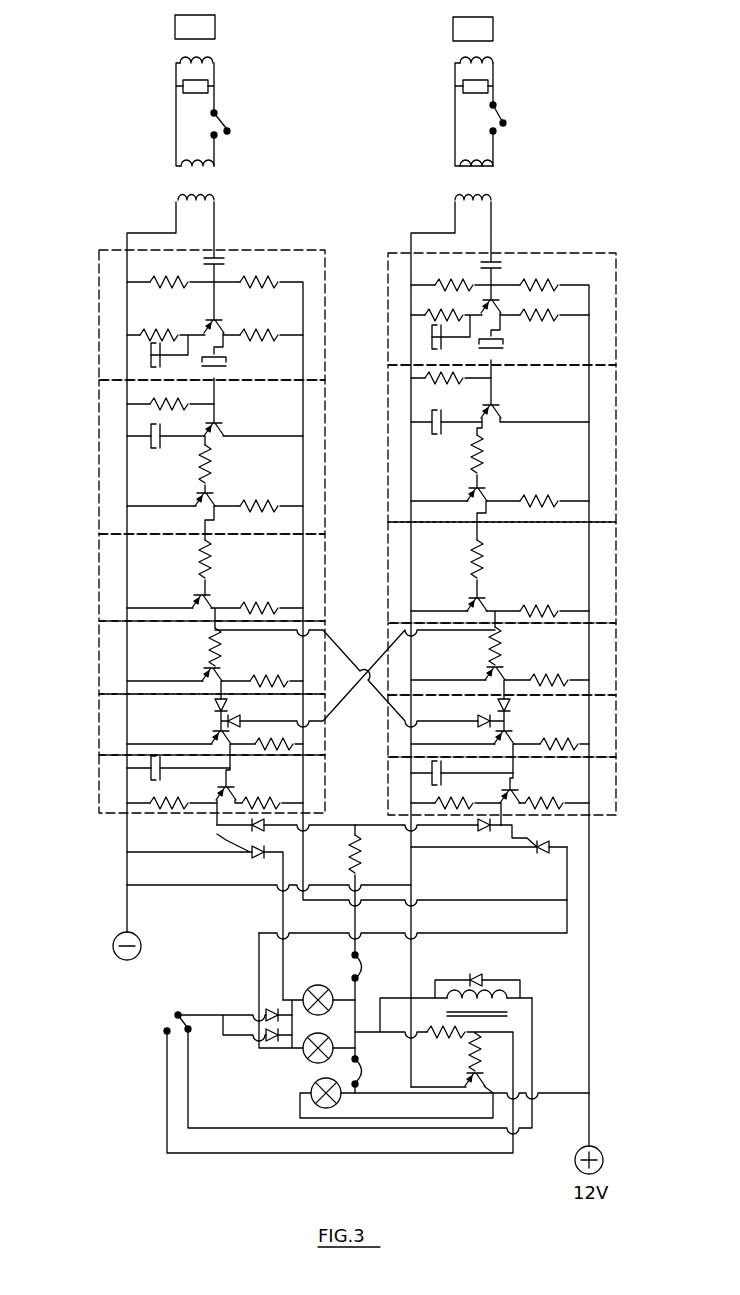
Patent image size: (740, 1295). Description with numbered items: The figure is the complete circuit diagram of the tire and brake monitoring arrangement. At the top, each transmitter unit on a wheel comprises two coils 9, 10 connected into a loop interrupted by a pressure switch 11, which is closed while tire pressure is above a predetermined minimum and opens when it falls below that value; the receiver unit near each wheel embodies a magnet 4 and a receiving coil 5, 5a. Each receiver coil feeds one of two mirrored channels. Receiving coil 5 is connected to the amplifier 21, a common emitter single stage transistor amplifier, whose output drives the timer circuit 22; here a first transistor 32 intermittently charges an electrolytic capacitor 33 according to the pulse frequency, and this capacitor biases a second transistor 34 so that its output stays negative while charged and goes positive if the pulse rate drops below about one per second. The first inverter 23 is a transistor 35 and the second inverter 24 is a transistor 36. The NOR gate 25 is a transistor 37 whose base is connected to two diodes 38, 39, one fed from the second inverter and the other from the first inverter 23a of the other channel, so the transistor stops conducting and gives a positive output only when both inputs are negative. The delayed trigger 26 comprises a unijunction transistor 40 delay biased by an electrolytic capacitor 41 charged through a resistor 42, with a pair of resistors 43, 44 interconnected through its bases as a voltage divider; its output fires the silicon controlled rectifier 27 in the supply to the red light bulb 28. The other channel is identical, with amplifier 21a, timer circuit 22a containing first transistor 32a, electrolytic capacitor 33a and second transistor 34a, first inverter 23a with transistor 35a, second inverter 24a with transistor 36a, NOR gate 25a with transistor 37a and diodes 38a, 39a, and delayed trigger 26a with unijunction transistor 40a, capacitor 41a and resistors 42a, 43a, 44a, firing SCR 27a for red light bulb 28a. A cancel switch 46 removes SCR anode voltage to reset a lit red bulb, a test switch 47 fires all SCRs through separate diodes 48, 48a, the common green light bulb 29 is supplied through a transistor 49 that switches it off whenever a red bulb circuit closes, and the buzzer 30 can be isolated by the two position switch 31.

The magnet 4 is at (505, 30).
The coil 10 is at (493, 62).
The pressure switch 11 is at (505, 120).
The coil 9 is at (460, 166).
The receiver coil 5a is at (178, 198).
The receiving coil 5 is at (491, 198).
The amplifier 21a is at (99, 318).
The timer circuit 22a is at (99, 452).
The first inverter 23a is at (99, 577).
The second inverter 24a is at (99, 657).
The NOR gate 25a is at (99, 722).
The delayed trigger 26a is at (99, 783).
The amplifier 21 is at (616, 318).
The timer circuit 22 is at (616, 440).
The first inverter 23 is at (616, 575).
The second inverter 24 is at (616, 660).
The NOR gate 25 is at (616, 725).
The delayed trigger 26 is at (616, 785).
The first transistor 32a is at (218, 426).
The electrolytic capacitor 33a is at (156, 448).
The second transistor 34a is at (210, 497).
The transistor 35a is at (206, 598).
The transistor 36a is at (216, 672).
The transistor 37a is at (216, 738).
The diode 38a is at (228, 706).
The diode 39a is at (240, 724).
The unijunction transistor 40a is at (224, 796).
The electrolytic capacitor 41a is at (158, 778).
The resistor 42a is at (275, 750).
The resistor 43a is at (282, 805).
The resistor 44a is at (176, 807).
The diode 48a is at (262, 831).
The silicon controlled rectifier 27a is at (250, 854).
The first transistor 32 is at (494, 409).
The electrolytic capacitor 33 is at (442, 434).
The second transistor 34 is at (481, 492).
The transistor 35 is at (481, 600).
The transistor 36 is at (499, 671).
The transistor 37 is at (510, 738).
The diode 38 is at (511, 707).
The diode 39 is at (479, 719).
The unijunction transistor 40 is at (504, 800).
The electrolytic capacitor 41 is at (444, 781).
The resistor 42 is at (552, 750).
The resistor 43 is at (545, 805).
The resistor 44 is at (447, 803).
The diode 48 is at (484, 831).
The silicon controlled rectifier 27 is at (545, 853).
The red light bulb 28a is at (320, 985).
The red light bulb 28 is at (304, 1058).
The green light bulb 29 is at (343, 1101).
The buzzer 30 is at (500, 994).
The two position switch 31 is at (174, 1021).
The cancel switch 46 is at (366, 1073).
The test switch 47 is at (366, 967).
The transistor 49 is at (478, 1078).